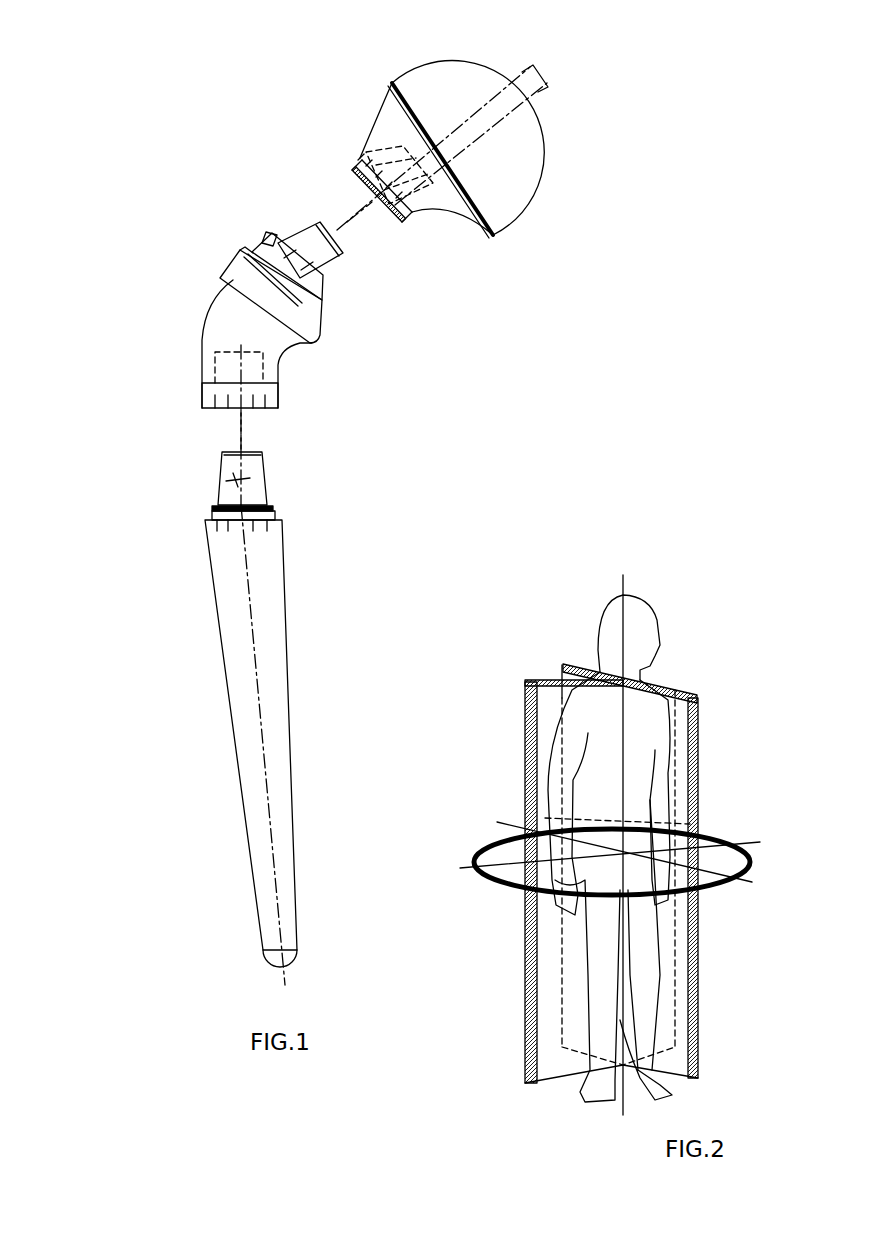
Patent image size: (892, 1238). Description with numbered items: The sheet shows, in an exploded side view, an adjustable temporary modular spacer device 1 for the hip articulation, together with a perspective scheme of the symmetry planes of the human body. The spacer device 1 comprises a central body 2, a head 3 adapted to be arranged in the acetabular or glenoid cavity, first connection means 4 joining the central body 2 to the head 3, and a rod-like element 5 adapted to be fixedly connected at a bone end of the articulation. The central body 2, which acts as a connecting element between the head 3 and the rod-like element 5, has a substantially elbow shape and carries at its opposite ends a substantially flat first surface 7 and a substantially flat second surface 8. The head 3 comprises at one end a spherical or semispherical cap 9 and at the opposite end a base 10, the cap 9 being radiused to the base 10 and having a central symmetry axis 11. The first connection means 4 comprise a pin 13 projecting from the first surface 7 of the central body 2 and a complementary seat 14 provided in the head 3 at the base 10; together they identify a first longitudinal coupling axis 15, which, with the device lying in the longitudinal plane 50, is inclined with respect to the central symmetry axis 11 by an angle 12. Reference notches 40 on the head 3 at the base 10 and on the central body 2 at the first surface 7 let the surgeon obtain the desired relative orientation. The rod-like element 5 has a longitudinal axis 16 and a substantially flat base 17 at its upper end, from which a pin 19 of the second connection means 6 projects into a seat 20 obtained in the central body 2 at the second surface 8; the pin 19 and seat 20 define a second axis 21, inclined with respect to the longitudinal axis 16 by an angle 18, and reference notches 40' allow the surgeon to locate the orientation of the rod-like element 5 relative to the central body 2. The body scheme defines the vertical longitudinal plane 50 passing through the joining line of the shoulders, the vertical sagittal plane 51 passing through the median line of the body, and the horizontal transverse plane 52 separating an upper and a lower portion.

In FIG. 1, the adjustable temporary modular spacer device 1 is at (162, 163).
In FIG. 1, the central body 2 is at (212, 282).
In FIG. 1, the head 3 is at (545, 242).
In FIG. 1, the first connection means 4 is at (296, 182).
In FIG. 1, the rod-like element 5 is at (225, 643).
In FIG. 1, the second connection means 6 is at (322, 435).
In FIG. 1, the first surface 7 is at (330, 292).
In FIG. 1, the second surface 8 is at (268, 410).
In FIG. 1, the cap 9 is at (543, 177).
In FIG. 1, the base 10 is at (388, 222).
In FIG. 1, the central symmetry axis 11 is at (538, 100).
In FIG. 1, the angle 12 is at (538, 75).
In FIG. 1, the pin 13 is at (297, 230).
In FIG. 1, the seat 14 is at (385, 150).
In FIG. 1, the first longitudinal coupling axis 15 is at (522, 72).
In FIG. 1, the longitudinal axis 16 is at (290, 970).
In FIG. 1, the flat base 17 is at (208, 518).
In FIG. 1, the angle 18 is at (245, 470).
In FIG. 1, the pin 19 is at (230, 475).
In FIG. 1, the seat 20 is at (215, 368).
In FIG. 1, the second axis 21 is at (238, 433).
In FIG. 1, the reference notches 40 is at (271, 181).
In FIG. 1, the reference notches 40' is at (232, 462).
In FIG. 2, the longitudinal plane 50 is at (545, 680).
In FIG. 2, the sagittal plane 51 is at (690, 717).
In FIG. 2, the transverse plane 52 is at (500, 870).